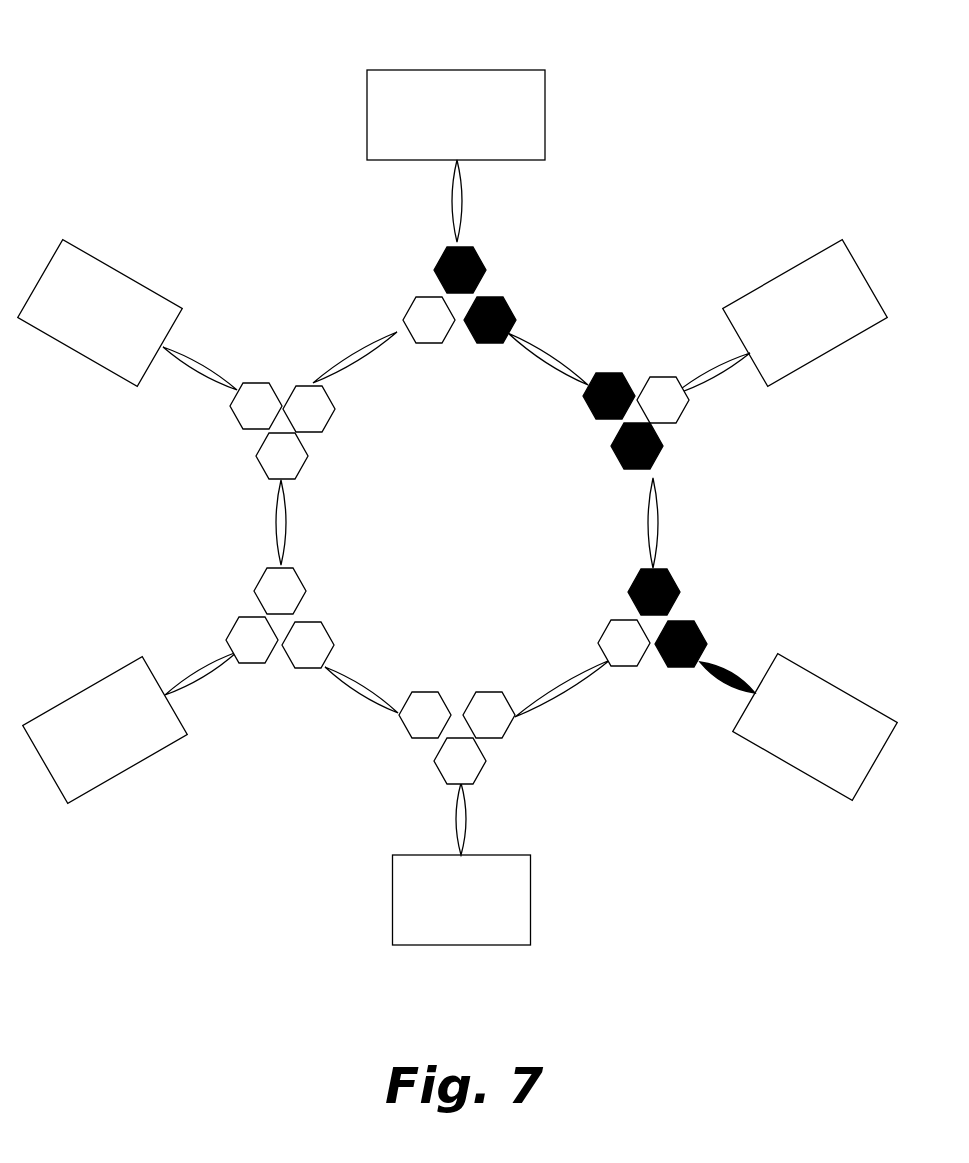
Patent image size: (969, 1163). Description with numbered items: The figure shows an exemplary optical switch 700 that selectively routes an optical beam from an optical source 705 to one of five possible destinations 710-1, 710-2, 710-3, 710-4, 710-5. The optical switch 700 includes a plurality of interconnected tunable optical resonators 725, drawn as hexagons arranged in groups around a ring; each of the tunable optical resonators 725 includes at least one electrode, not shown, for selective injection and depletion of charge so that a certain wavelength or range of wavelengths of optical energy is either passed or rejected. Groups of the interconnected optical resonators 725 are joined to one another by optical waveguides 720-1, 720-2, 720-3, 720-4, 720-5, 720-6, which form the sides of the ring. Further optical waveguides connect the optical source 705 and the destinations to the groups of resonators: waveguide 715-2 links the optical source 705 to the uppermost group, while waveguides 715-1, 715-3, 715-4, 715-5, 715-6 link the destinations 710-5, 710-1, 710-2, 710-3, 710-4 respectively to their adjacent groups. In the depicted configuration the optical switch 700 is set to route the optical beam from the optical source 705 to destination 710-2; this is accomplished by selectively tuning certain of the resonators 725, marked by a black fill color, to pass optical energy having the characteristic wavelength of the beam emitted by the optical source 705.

The optical switch 700 is at (200, 83).
The optical source 705 is at (530, 151).
The destination 710-1 is at (805, 313).
The destination 710-2 is at (815, 727).
The destination 710-3 is at (462, 900).
The destination 710-4 is at (105, 730).
The destination 710-5 is at (100, 313).
The optical waveguide 715-1 is at (207, 368).
The optical waveguide 715-2 is at (460, 236).
The optical waveguide 715-3 is at (717, 370).
The optical waveguide 715-4 is at (705, 670).
The optical waveguide 715-5 is at (460, 810).
The optical waveguide 715-6 is at (202, 673).
The optical waveguide 720-1 is at (350, 358).
The optical waveguide 720-2 is at (565, 368).
The optical waveguide 720-3 is at (655, 550).
The optical waveguide 720-4 is at (568, 688).
The optical waveguide 720-5 is at (353, 705).
The optical waveguide 720-6 is at (280, 522).
The tunable optical resonator 725 is at (460, 293).